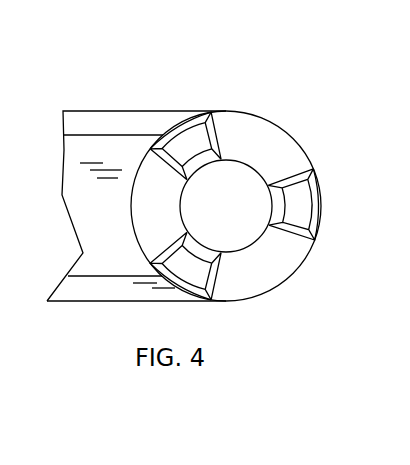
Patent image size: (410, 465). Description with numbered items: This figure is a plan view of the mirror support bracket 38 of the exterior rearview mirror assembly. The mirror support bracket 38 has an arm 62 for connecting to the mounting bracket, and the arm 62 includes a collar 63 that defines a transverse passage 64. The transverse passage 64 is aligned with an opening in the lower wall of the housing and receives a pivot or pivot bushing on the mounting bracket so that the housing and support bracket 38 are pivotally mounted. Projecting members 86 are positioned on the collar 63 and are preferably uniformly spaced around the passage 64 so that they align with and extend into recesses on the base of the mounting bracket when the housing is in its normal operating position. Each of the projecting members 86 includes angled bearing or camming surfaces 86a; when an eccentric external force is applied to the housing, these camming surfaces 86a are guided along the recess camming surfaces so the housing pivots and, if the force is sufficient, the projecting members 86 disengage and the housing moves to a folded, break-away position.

The mirror support bracket 38 is at (62, 90).
The arm 62 is at (75, 302).
The collar 63 is at (288, 280).
The transverse passage 64 is at (243, 233).
The projecting members 86 is at (231, 199).
The camming surfaces 86a is at (150, 149).